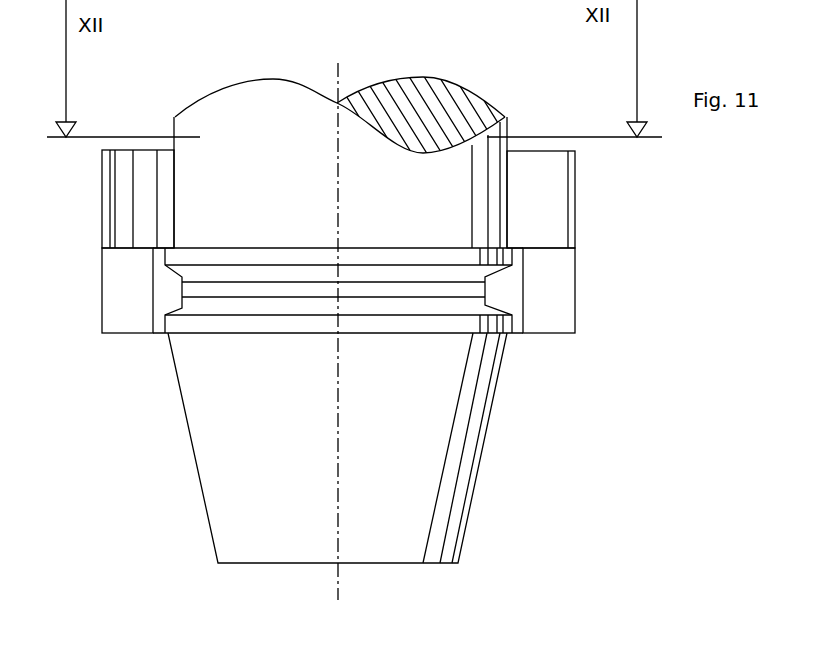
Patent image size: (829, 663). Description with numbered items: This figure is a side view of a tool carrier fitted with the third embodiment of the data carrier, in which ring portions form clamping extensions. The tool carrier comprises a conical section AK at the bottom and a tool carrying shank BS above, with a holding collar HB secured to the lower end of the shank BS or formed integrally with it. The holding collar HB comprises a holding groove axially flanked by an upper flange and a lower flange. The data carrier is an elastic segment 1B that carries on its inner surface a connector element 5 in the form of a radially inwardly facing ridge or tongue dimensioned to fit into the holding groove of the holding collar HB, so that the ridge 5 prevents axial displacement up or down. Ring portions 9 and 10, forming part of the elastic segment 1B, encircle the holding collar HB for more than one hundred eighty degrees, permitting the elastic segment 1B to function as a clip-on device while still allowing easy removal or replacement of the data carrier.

The elastic segment 1B is at (583, 208).
The connector element 5 is at (507, 293).
The ring portion 9 is at (115, 305).
The ring portion 10 is at (565, 307).
The tool carrying shank BS is at (273, 107).
The holding collar HB is at (368, 322).
The conical section AK is at (387, 537).